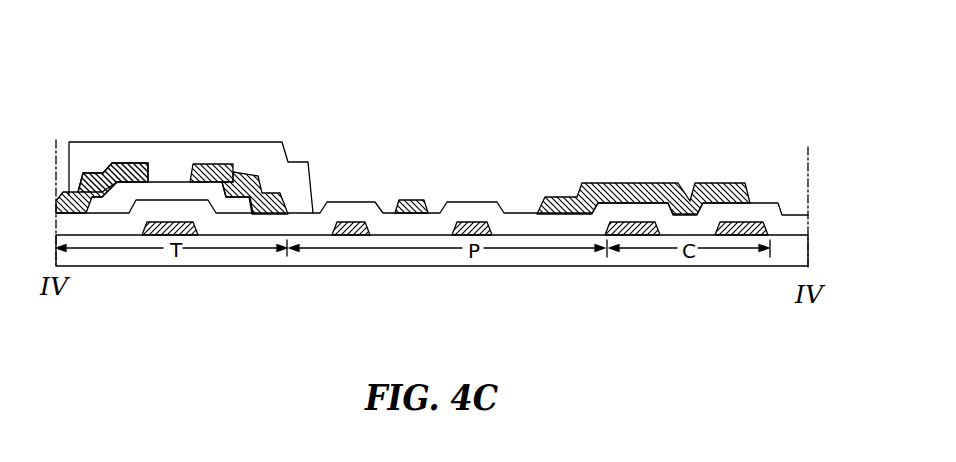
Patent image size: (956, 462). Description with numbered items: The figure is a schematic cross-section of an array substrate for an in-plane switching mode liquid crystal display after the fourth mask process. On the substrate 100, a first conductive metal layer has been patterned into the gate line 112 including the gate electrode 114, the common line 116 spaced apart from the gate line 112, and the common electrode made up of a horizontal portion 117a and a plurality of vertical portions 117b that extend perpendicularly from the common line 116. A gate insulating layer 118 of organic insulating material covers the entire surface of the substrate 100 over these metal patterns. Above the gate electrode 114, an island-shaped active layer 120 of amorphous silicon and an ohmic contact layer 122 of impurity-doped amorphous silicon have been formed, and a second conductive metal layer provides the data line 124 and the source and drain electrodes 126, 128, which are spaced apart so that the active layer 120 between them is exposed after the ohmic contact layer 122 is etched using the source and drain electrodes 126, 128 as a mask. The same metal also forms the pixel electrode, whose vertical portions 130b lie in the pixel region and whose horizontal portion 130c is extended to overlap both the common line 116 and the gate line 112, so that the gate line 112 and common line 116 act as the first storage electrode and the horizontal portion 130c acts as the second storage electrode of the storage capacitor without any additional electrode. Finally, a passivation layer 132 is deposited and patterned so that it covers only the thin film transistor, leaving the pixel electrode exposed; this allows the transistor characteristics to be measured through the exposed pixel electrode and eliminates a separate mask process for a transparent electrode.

The substrate 100 is at (804, 263).
The gate line 112 is at (740, 235).
The gate electrode 114 is at (159, 235).
The common line 116 is at (634, 235).
The horizontal portion 117a is at (344, 235).
The vertical portions 117b is at (463, 235).
The gate insulating layer 118 is at (473, 208).
The active layer 120 is at (171, 184).
The ohmic contact layer 122 is at (238, 179).
The data line 124 is at (58, 158).
The source electrode 126 is at (130, 166).
The drain electrode 128 is at (218, 166).
The vertical portions 130b is at (415, 201).
The horizontal portion 130c is at (559, 198).
The passivation layer 132 is at (298, 172).